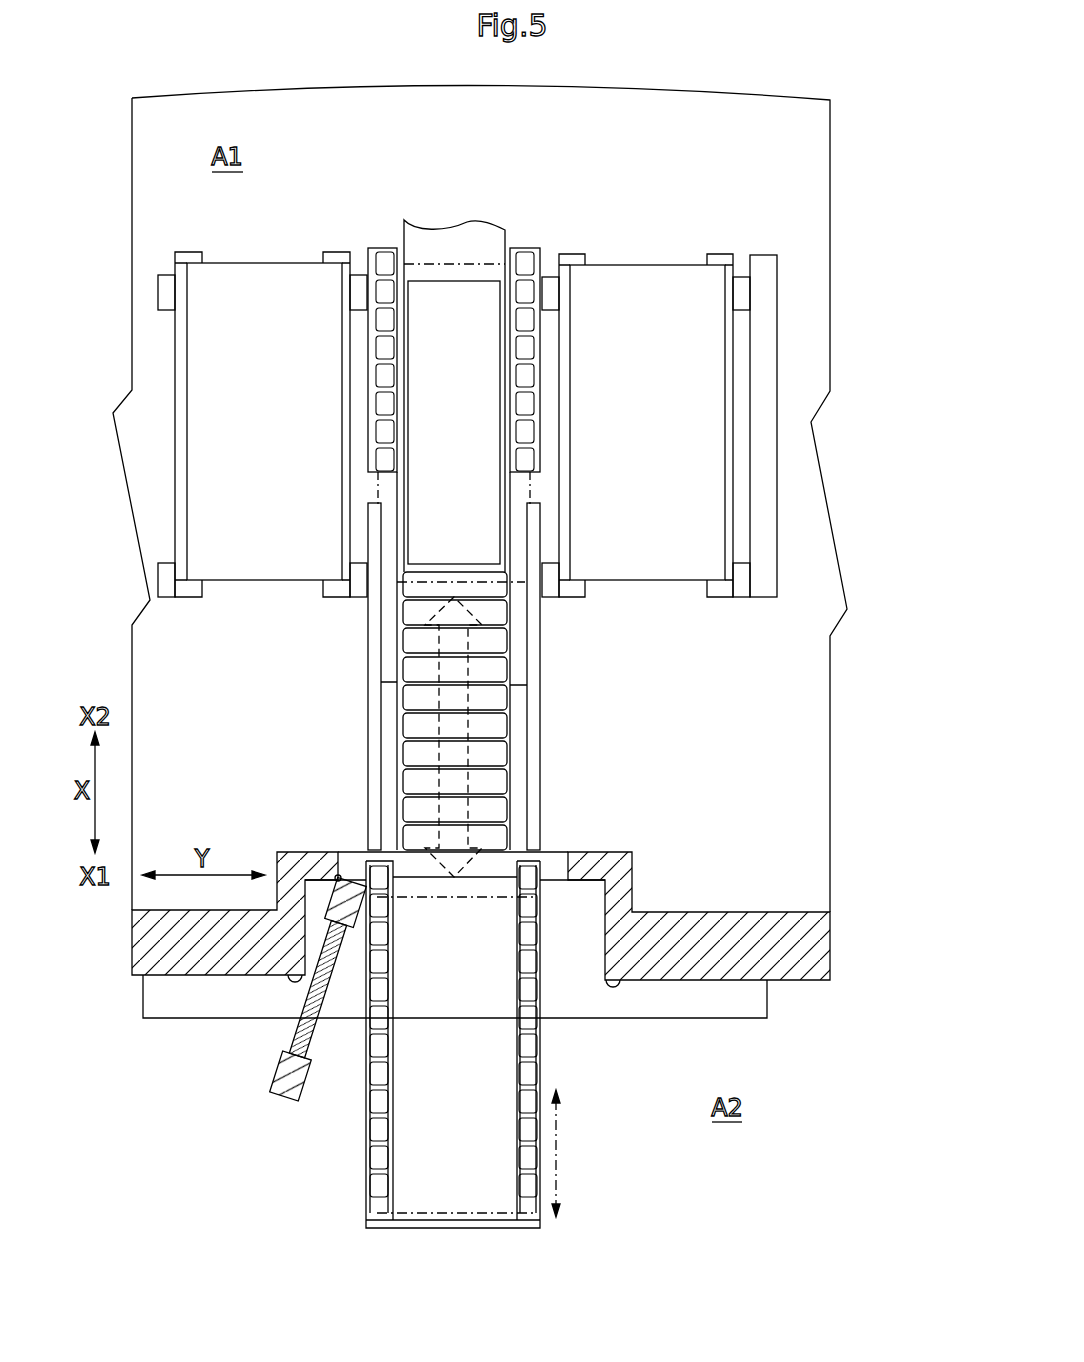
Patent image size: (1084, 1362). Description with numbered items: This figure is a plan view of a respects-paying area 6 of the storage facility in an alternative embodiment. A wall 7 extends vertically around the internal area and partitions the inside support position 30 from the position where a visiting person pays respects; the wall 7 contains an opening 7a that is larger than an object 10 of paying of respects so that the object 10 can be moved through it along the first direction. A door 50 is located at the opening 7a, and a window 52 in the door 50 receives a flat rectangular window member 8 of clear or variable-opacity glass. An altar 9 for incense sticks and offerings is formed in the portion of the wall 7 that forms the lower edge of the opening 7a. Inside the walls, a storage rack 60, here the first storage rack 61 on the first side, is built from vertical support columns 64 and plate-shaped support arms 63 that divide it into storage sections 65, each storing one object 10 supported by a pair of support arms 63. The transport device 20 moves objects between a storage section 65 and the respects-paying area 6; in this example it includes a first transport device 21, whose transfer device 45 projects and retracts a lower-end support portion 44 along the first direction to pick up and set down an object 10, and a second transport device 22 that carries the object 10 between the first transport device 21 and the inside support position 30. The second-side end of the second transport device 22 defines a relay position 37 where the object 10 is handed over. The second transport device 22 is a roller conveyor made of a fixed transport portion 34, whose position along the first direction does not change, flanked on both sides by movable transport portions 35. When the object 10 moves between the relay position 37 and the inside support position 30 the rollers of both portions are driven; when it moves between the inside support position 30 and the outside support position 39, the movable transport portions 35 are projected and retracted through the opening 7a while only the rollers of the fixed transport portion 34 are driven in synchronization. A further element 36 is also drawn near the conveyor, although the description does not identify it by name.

The respects-paying area 6 is at (638, 1105).
The wall 7 is at (823, 943).
The opening 7a is at (556, 850).
The window member 8 is at (297, 1030).
The altar 9 is at (748, 1020).
The object of paying of respects 10 is at (235, 288).
The transport device 20 is at (519, 431).
The first transport device 21 is at (397, 230).
The second transport device 22 is at (550, 625).
The inside support position 30 is at (450, 752).
The fixed transport portion 34 is at (418, 695).
The movable transport portion 35 is at (513, 1133).
The right guide rail 36 is at (537, 725).
The relay position 37 is at (442, 305).
The outside support position 39 is at (443, 1170).
The lower-end support portion 44 is at (473, 291).
The transfer device 45 is at (501, 373).
The door 50 is at (321, 1031).
The window 52 is at (307, 1062).
The storage rack 60 is at (840, 426).
The first storage rack 61 is at (793, 411).
The support arm 63 is at (335, 588).
The support column 64 is at (158, 296).
The storage section 65 is at (280, 297).